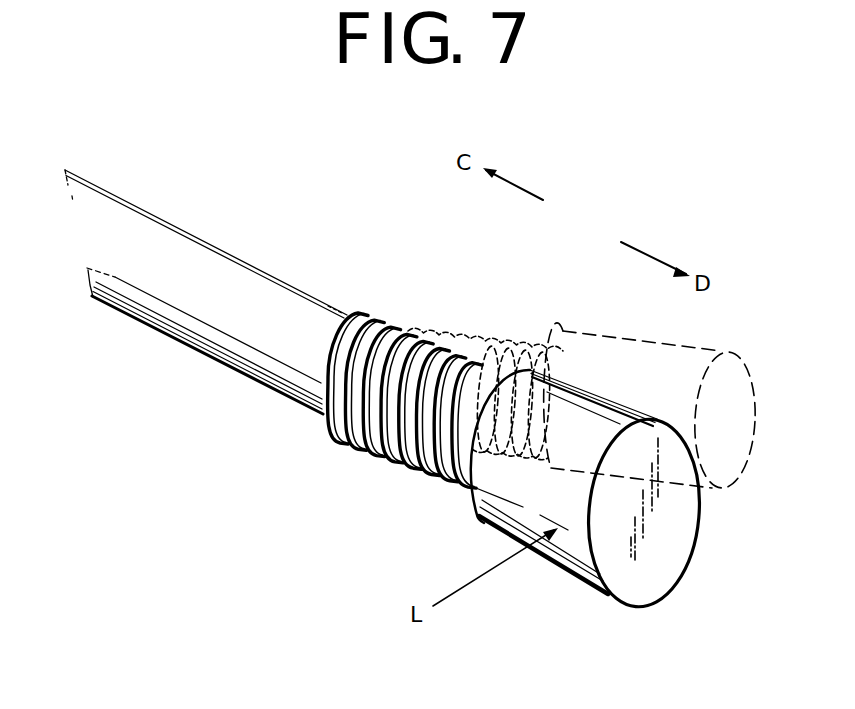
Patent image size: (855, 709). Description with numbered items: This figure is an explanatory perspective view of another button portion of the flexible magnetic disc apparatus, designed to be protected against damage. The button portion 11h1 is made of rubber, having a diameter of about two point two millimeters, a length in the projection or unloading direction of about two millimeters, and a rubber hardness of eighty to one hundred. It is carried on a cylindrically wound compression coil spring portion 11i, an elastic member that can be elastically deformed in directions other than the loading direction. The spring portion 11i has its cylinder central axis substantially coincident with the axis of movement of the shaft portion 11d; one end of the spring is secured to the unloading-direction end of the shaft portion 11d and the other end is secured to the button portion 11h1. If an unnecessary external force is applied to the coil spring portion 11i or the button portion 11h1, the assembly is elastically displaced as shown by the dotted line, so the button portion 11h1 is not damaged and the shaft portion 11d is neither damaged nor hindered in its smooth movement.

The shaft portion 11d is at (293, 318).
The cylindrically wound compression coil spring portion 11i is at (378, 413).
The button portion 11h1 is at (663, 547).